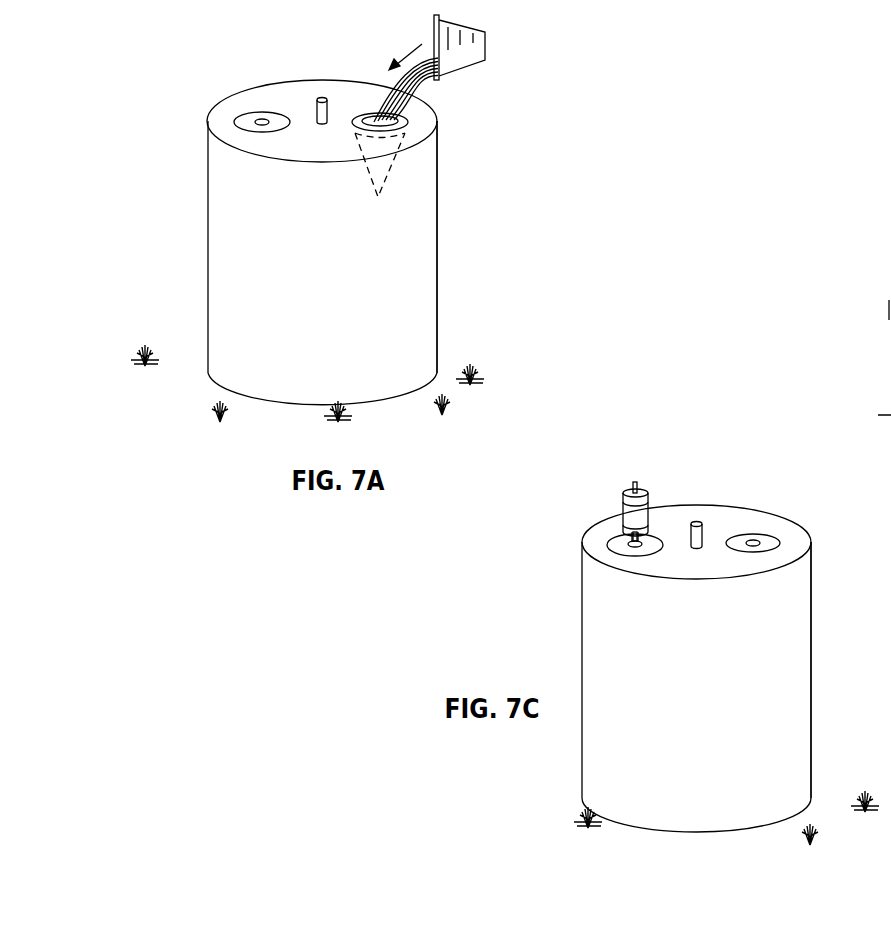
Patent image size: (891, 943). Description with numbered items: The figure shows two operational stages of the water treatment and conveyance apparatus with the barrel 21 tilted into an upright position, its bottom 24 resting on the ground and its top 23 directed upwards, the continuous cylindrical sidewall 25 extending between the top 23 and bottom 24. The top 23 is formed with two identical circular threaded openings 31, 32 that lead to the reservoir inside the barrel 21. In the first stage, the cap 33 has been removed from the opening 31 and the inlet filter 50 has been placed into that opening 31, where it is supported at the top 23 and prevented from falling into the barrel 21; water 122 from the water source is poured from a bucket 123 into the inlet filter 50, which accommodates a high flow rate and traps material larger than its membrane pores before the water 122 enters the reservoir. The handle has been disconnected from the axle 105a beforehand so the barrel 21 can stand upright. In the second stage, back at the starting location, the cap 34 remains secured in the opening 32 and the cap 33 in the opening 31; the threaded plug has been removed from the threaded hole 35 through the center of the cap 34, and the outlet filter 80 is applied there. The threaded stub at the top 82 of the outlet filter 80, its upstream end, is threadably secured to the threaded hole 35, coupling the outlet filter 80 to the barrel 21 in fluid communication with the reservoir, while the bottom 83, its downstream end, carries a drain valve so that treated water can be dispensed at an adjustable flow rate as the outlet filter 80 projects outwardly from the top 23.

In FIG. 7A, the barrel 21 is at (413, 328).
In FIG. 7C, the barrel 21 is at (790, 652).
In FIG. 7A, the top 23 is at (208, 124).
In FIG. 7C, the top 23 is at (813, 545).
In FIG. 7A, the bottom 24 is at (208, 373).
In FIG. 7C, the bottom 24 is at (740, 828).
In FIG. 7A, the sidewall 25 is at (437, 243).
In FIG. 7C, the sidewall 25 is at (811, 703).
In FIG. 7A, the opening 31 is at (378, 116).
In FIG. 7C, the opening 31 is at (783, 548).
In FIG. 7A, the opening 32 is at (240, 110).
In FIG. 7C, the opening 32 is at (608, 556).
In FIG. 7C, the cap 33 is at (748, 535).
In FIG. 7A, the cap 34 is at (277, 113).
In FIG. 7C, the cap 34 is at (617, 543).
In FIG. 7C, the threaded hole 35 is at (634, 548).
In FIG. 7A, the inlet filter 50 is at (395, 174).
In FIG. 7C, the outlet filter 80 is at (631, 512).
In FIG. 7C, the top 82 is at (662, 545).
In FIG. 7C, the bottom 83 is at (635, 482).
In FIG. 7A, the axle 105a is at (332, 103).
In FIG. 7C, the axle 105a is at (697, 530).
In FIG. 7A, the water 122 is at (430, 86).
In FIG. 7A, the bucket 123 is at (462, 58).